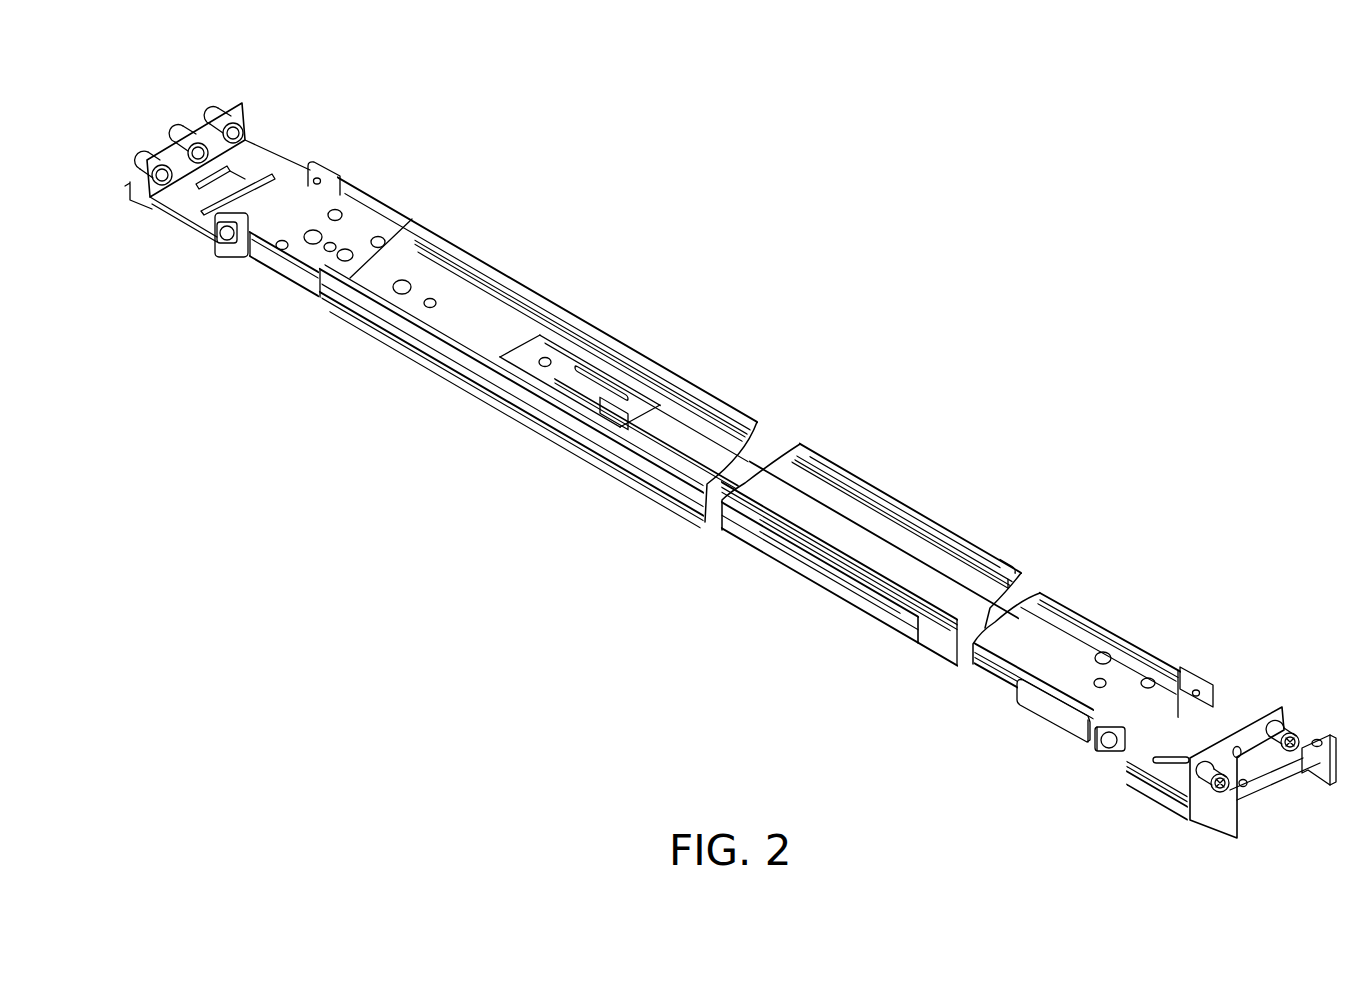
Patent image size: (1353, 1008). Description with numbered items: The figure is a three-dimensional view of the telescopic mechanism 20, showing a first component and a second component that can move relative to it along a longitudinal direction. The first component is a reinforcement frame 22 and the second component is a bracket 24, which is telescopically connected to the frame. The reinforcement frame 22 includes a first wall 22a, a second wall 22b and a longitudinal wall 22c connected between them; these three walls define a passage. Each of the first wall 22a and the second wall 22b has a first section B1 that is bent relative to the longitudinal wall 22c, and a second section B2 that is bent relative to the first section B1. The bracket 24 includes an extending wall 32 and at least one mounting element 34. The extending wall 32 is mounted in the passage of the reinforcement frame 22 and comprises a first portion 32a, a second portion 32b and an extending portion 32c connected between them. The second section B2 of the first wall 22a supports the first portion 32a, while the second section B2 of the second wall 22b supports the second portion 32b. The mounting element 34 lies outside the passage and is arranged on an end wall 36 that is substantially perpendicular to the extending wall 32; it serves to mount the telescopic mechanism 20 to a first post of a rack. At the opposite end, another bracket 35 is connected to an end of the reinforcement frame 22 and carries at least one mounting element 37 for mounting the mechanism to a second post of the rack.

The telescopic mechanism 20 is at (888, 378).
The reinforcement frame 22 is at (832, 452).
The first wall 22a is at (505, 268).
The second wall 22b is at (381, 331).
The longitudinal wall 22c is at (432, 257).
The bracket 24 is at (1105, 605).
The extending wall 32 is at (1068, 598).
The first portion 32a is at (1022, 580).
The second portion 32b is at (925, 632).
The extending portion 32c is at (808, 515).
The mounting element 34 is at (1222, 772).
The another bracket 35 is at (285, 160).
The end wall 36 is at (1250, 737).
The mounting element 37 is at (205, 106).
The first section B1 is at (1011, 568).
The second section B2 is at (925, 518).